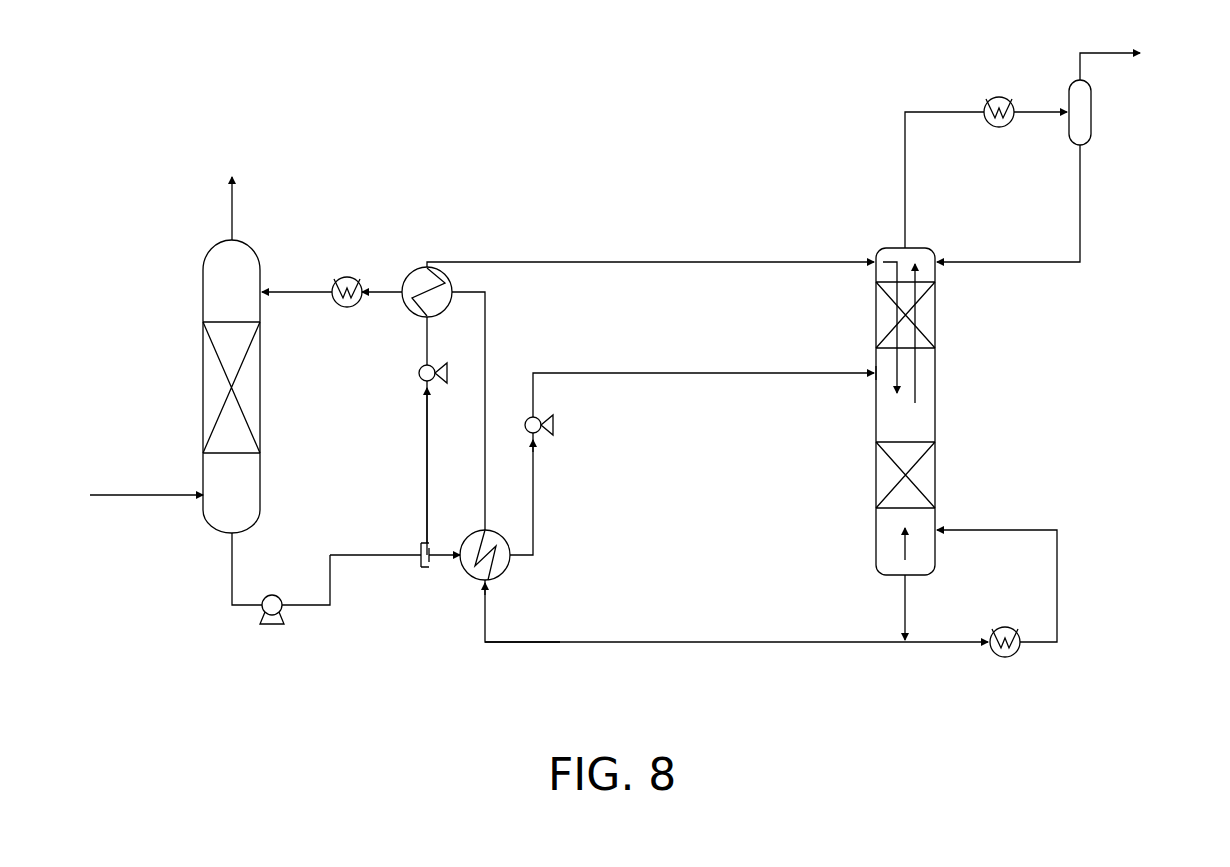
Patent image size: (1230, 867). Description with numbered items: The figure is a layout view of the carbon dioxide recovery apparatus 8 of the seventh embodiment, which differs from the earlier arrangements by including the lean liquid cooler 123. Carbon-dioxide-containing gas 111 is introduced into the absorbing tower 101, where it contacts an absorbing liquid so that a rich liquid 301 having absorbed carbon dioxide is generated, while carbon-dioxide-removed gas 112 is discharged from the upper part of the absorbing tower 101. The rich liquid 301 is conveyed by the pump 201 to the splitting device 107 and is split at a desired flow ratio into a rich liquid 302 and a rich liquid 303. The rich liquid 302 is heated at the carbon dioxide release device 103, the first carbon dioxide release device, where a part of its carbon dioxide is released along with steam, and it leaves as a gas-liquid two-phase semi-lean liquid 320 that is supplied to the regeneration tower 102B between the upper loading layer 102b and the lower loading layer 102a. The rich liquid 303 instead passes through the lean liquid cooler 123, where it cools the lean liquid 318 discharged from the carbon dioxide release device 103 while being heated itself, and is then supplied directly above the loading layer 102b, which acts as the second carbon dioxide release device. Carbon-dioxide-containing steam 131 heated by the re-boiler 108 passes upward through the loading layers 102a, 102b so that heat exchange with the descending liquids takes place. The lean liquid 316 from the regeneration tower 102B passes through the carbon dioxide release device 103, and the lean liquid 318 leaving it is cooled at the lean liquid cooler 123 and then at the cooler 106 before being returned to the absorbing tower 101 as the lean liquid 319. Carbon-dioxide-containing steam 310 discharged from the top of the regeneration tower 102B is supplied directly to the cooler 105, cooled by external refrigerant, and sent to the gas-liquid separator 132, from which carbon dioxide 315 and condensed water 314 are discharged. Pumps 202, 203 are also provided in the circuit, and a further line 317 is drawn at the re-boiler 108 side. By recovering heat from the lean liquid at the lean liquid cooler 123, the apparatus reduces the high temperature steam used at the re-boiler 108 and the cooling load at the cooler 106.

The carbon dioxide recovery apparatus 8 is at (333, 125).
The absorbing tower 101 is at (203, 312).
The loading layer 102a is at (912, 452).
The loading layer 102b is at (925, 318).
The regeneration tower 102B is at (936, 373).
The carbon dioxide release device 103 is at (505, 573).
The cooler 105 is at (997, 96).
The cooler 106 is at (347, 277).
The splitting device 107 is at (420, 550).
The re-boiler 108 is at (986, 655).
The carbon-dioxide-containing gas 111 is at (124, 495).
The carbon-dioxide-removed gas 112 is at (232, 215).
The lean liquid cooler 123 is at (427, 267).
The carbon-dioxide-containing steam 131 is at (915, 550).
The gas-liquid separator 132 is at (1093, 97).
The pump 201 is at (276, 626).
The pump 202 is at (548, 438).
The pump 203 is at (422, 369).
The rich liquid 301 is at (258, 607).
The rich liquid 302 is at (462, 570).
The rich liquid 303 is at (425, 428).
The carbon-dioxide-containing steam 310 is at (905, 173).
The condensed water 314 is at (1082, 183).
The carbon dioxide 315 is at (1088, 53).
The lean liquid 316 is at (740, 645).
The reboiler return line 317 is at (1057, 530).
The lean liquid 318 is at (485, 328).
The lean liquid 319 is at (298, 290).
The semi-lean liquid 320 is at (538, 528).